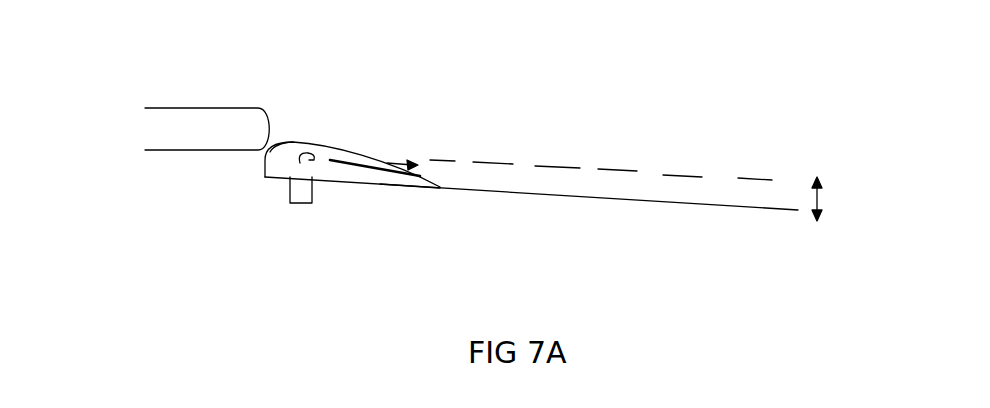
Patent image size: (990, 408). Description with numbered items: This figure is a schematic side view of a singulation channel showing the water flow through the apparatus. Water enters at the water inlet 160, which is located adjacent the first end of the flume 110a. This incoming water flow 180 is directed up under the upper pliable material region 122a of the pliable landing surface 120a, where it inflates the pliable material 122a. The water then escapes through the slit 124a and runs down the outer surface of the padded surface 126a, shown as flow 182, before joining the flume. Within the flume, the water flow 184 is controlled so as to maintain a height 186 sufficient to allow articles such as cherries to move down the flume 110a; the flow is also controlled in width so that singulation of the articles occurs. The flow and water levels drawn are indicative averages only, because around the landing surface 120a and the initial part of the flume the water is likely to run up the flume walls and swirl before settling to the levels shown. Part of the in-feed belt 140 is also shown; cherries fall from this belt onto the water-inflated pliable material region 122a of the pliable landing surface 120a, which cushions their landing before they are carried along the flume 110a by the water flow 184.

The flume 110a is at (531, 228).
The pliable landing surface 120a is at (302, 100).
The upper pliable material region 122a is at (340, 108).
The slit 124a is at (399, 130).
The padded surface 126a is at (421, 228).
The in-feed belt 140 is at (159, 172).
The water inlet 160 is at (211, 234).
The incoming water flow 180 is at (255, 268).
The flow down padded surface 182 is at (455, 134).
The water flow in the flume 184 is at (601, 139).
The height 186 is at (879, 191).